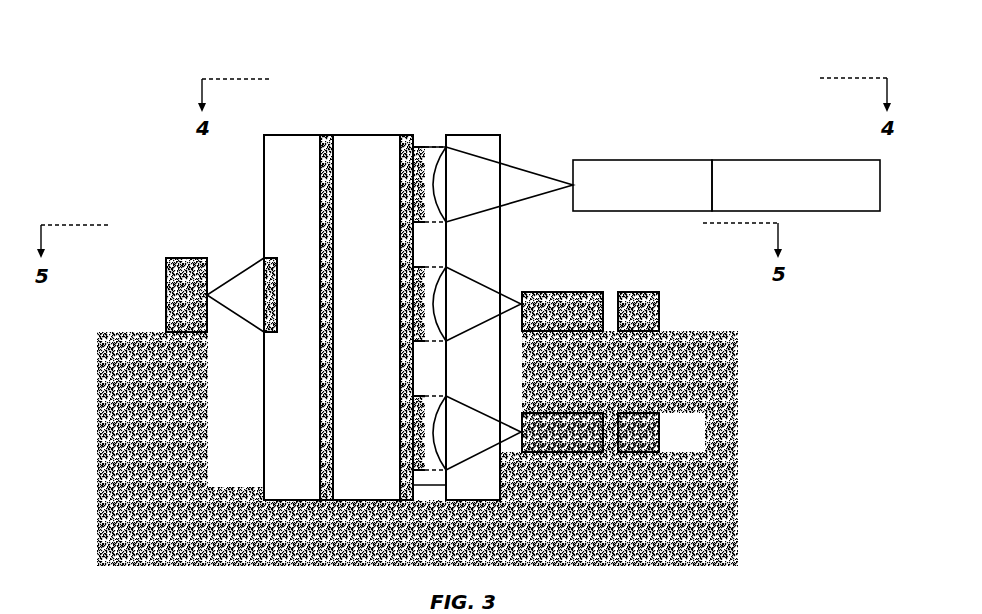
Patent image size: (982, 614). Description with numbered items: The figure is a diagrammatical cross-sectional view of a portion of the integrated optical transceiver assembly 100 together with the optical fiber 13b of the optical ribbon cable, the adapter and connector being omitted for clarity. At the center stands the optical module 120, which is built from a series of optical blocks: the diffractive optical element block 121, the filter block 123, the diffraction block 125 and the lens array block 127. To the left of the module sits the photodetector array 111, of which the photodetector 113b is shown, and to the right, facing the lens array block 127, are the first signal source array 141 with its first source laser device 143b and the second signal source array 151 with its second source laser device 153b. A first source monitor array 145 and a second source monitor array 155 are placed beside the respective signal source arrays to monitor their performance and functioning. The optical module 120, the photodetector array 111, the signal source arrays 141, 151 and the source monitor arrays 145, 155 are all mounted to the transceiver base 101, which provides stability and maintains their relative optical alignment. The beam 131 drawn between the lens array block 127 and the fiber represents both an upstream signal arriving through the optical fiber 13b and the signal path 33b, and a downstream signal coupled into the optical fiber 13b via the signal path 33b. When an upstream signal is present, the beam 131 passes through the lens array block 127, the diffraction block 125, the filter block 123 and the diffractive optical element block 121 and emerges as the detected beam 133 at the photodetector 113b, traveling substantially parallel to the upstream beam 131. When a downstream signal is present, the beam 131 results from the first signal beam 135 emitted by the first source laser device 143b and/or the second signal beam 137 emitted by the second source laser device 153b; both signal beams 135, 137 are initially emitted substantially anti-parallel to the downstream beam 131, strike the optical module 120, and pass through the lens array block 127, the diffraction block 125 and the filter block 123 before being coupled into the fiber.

The integrated optical transceiver assembly 100 is at (462, 283).
The transceiver base 101 is at (115, 332).
The photodetector array 111 is at (188, 258).
The photodetector 113b is at (175, 298).
The optical module 120 is at (387, 250).
The diffractive optical element block 121 is at (296, 135).
The filter block 123 is at (372, 135).
The diffraction block 125 is at (418, 135).
The lens array block 127 is at (485, 304).
The beam 131 is at (515, 165).
The detected beam 133 is at (264, 262).
The first signal beam 135 is at (470, 280).
The second signal beam 137 is at (507, 440).
The signal path 33b is at (645, 160).
The optical fiber 13b is at (812, 160).
The first signal source array 141 is at (557, 292).
The first source laser device 143b is at (542, 292).
The first source monitor array 145 is at (640, 292).
The second signal source array 151 is at (563, 413).
The second source laser device 153b is at (552, 443).
The second source monitor array 155 is at (640, 413).